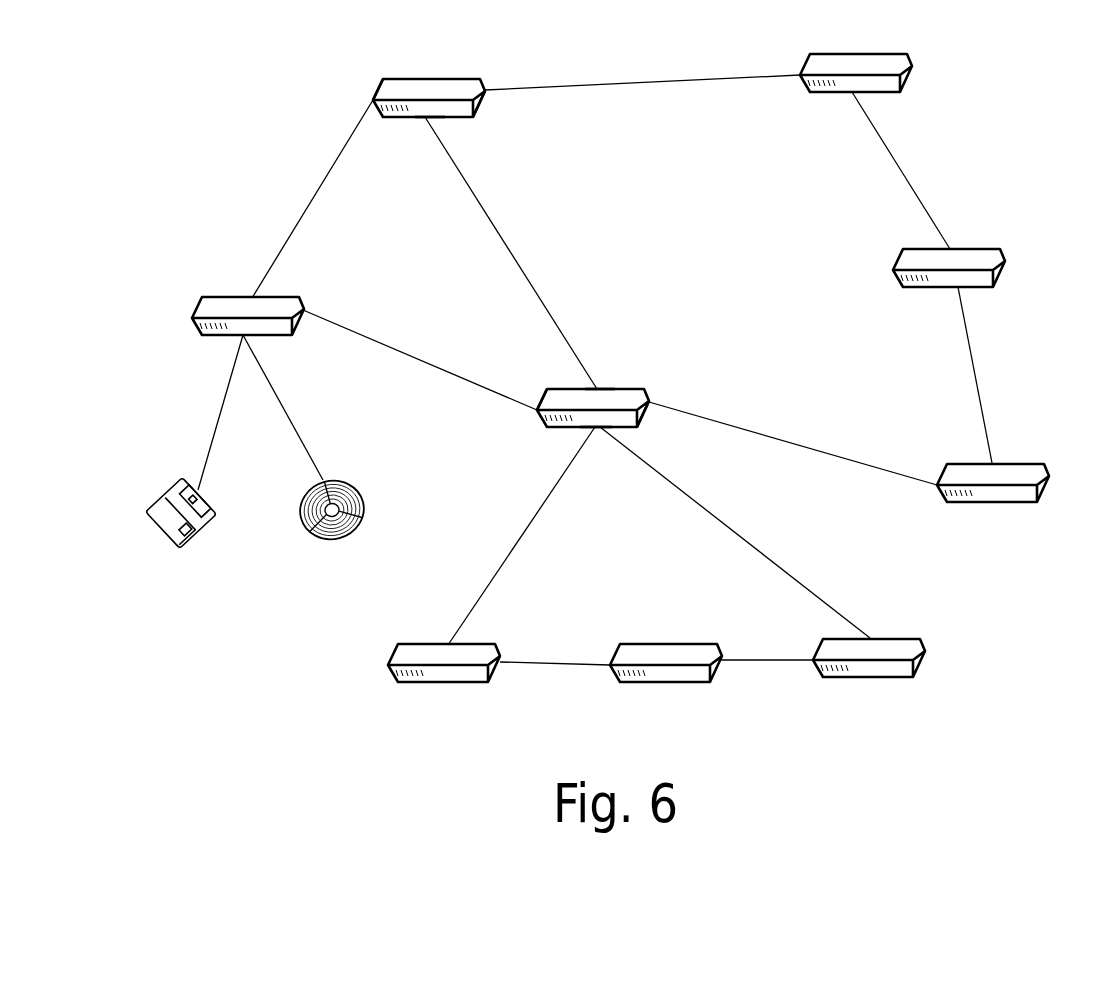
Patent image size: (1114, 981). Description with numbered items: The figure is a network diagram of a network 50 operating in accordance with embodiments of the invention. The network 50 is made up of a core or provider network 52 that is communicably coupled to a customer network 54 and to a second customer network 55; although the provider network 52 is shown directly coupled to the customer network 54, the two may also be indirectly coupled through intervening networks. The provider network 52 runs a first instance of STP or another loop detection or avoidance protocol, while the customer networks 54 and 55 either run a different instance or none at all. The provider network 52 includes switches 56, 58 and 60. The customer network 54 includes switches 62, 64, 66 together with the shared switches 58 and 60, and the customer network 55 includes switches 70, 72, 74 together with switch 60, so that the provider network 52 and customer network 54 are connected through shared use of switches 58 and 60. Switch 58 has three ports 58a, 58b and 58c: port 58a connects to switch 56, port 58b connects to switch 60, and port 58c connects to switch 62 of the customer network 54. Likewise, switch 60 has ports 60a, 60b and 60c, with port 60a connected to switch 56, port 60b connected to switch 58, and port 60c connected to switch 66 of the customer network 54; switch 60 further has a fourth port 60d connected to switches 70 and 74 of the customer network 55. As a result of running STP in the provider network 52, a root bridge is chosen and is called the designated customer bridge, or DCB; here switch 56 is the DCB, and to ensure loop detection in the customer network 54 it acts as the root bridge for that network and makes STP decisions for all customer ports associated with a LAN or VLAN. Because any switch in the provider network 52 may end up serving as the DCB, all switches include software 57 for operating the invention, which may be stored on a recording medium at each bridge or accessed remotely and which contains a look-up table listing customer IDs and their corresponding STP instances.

The network 50 is at (1078, 168).
The provider network 52 is at (420, 272).
The customer network 54 is at (730, 280).
The customer network 55 is at (631, 580).
The switch 56 is at (202, 302).
The software 57 is at (197, 537).
The switch 58 is at (432, 78).
The port 58a is at (377, 108).
The port 58b is at (433, 120).
The port 58c is at (487, 98).
The switch 60 is at (553, 428).
The port 60a is at (540, 403).
The port 60b is at (600, 387).
The port 60c is at (647, 412).
The fourth port 60d is at (595, 430).
The switch 62 is at (862, 57).
The switch 64 is at (952, 250).
The switch 66 is at (995, 463).
The switch 70 is at (440, 682).
The switch 72 is at (667, 682).
The switch 74 is at (880, 677).